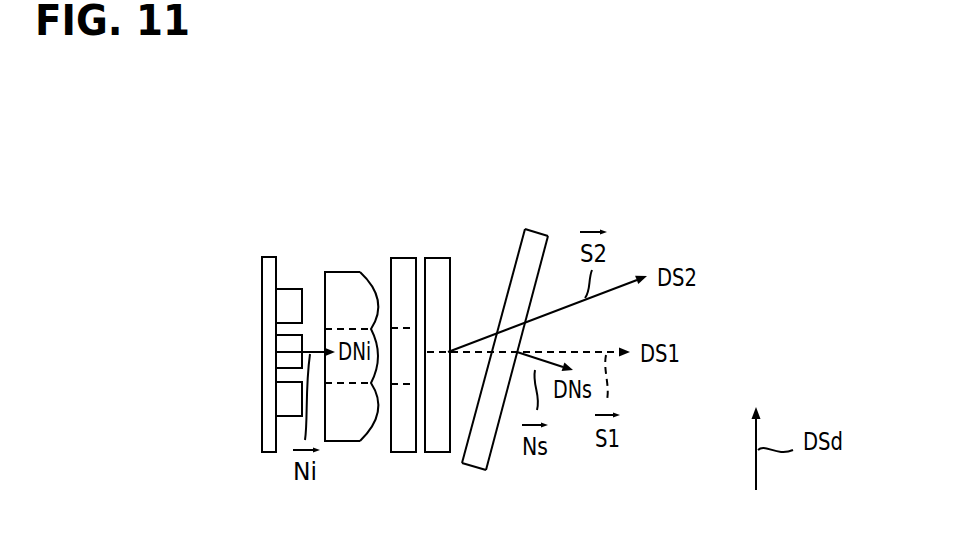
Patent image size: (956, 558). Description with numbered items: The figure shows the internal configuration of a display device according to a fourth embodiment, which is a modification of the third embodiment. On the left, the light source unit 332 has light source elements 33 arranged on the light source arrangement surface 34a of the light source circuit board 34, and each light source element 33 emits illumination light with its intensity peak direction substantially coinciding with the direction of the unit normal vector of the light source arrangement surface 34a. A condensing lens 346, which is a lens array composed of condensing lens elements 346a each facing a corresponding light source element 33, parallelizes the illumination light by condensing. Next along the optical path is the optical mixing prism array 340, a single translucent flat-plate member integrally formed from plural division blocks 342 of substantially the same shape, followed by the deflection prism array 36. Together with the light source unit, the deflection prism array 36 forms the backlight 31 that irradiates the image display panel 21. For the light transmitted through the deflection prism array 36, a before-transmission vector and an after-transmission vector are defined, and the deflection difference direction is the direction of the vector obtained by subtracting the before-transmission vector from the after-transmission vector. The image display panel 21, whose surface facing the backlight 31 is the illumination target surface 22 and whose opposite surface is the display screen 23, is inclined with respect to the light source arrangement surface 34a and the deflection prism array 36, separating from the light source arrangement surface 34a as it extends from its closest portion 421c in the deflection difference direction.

The backlight 31 is at (270, 283).
The light source unit 332 is at (270, 257).
The light source element 33 is at (276, 305).
The light source circuit board 34 is at (262, 430).
The light source arrangement surface 34a is at (281, 269).
The condensing lens 346 is at (346, 367).
The condensing lens element 346a is at (342, 445).
The optical mixing prism array 340 is at (401, 362).
The division block 342 is at (410, 453).
The deflection prism array 36 is at (440, 258).
The image display panel 21 is at (509, 353).
The illumination target surface 22 is at (504, 266).
The display screen 23 is at (550, 266).
The closest portion 421c is at (463, 467).